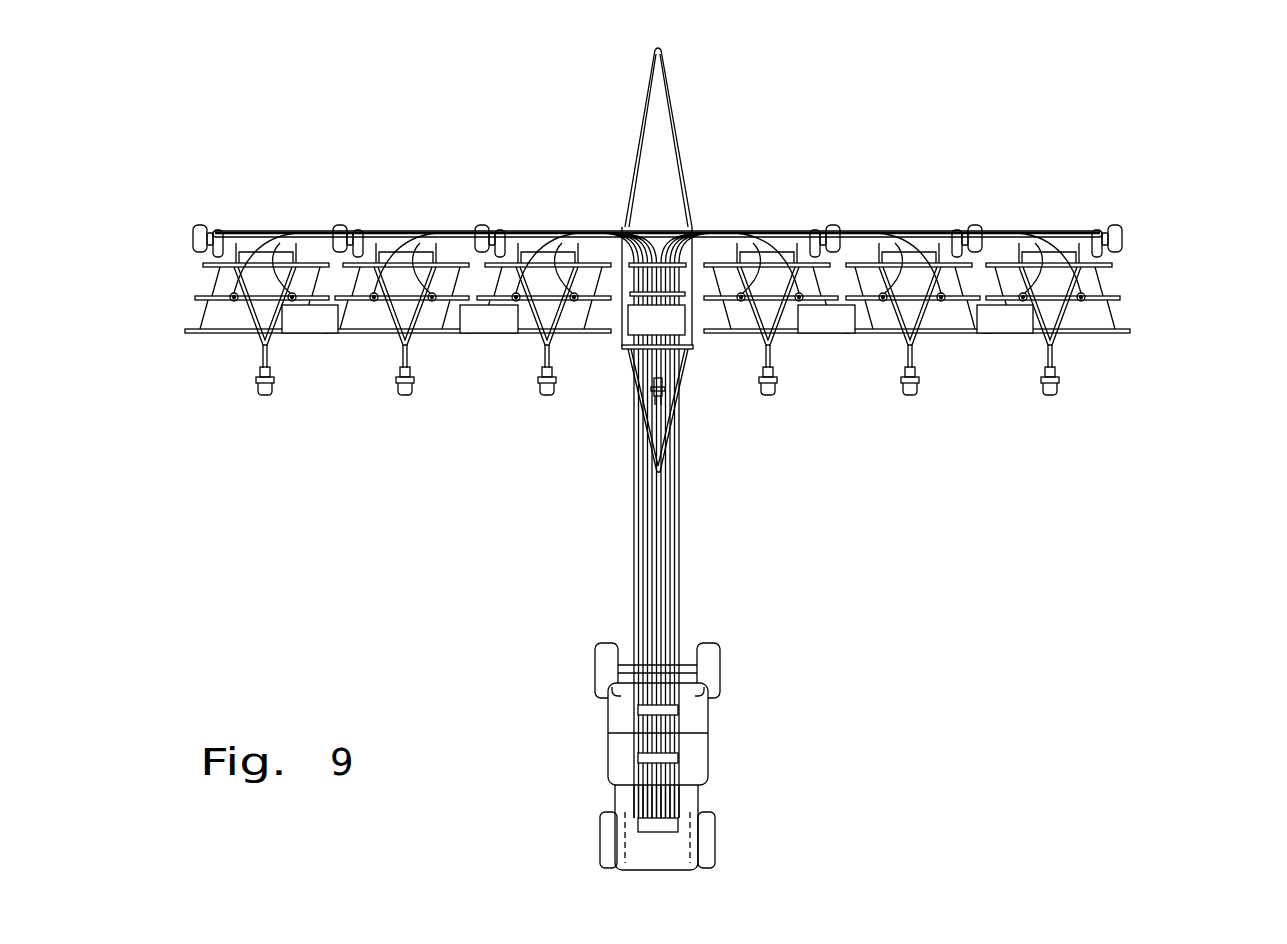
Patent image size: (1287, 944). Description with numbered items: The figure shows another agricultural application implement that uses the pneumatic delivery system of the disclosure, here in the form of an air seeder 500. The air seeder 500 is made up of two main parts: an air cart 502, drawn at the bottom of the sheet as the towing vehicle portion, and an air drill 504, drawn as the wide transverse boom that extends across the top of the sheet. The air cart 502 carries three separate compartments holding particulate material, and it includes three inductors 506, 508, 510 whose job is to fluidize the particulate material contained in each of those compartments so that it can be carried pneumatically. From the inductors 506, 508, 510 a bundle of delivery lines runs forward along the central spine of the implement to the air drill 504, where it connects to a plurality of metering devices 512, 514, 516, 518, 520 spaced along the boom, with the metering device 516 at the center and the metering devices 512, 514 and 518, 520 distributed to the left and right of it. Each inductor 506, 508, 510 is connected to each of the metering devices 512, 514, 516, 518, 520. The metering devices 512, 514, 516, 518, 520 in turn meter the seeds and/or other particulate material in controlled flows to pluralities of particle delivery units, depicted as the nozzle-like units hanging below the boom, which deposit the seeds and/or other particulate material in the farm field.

The air seeder 500 is at (187, 219).
The air cart 502 is at (728, 720).
The air drill 504 is at (1138, 252).
The inductor 506 is at (672, 823).
The inductor 508 is at (638, 758).
The inductor 510 is at (638, 710).
The metering device 512 is at (318, 328).
The metering device 514 is at (493, 330).
The metering device 516 is at (645, 325).
The metering device 518 is at (823, 323).
The metering device 520 is at (1007, 322).